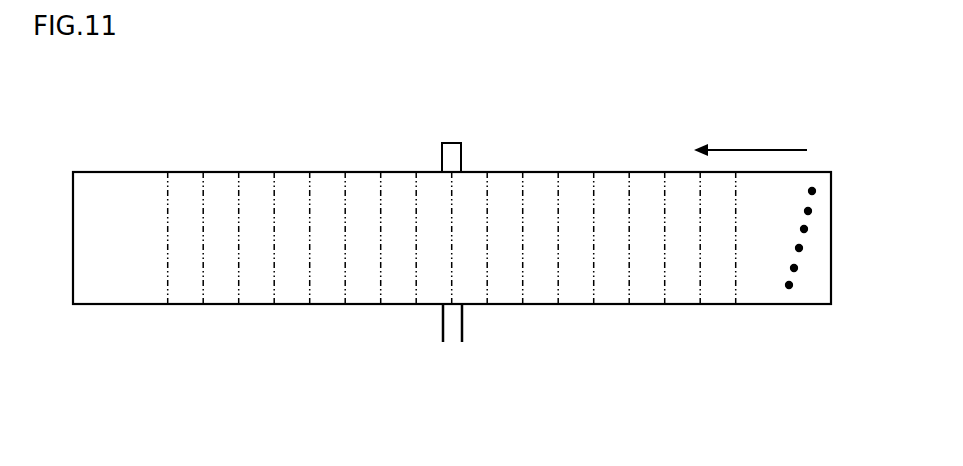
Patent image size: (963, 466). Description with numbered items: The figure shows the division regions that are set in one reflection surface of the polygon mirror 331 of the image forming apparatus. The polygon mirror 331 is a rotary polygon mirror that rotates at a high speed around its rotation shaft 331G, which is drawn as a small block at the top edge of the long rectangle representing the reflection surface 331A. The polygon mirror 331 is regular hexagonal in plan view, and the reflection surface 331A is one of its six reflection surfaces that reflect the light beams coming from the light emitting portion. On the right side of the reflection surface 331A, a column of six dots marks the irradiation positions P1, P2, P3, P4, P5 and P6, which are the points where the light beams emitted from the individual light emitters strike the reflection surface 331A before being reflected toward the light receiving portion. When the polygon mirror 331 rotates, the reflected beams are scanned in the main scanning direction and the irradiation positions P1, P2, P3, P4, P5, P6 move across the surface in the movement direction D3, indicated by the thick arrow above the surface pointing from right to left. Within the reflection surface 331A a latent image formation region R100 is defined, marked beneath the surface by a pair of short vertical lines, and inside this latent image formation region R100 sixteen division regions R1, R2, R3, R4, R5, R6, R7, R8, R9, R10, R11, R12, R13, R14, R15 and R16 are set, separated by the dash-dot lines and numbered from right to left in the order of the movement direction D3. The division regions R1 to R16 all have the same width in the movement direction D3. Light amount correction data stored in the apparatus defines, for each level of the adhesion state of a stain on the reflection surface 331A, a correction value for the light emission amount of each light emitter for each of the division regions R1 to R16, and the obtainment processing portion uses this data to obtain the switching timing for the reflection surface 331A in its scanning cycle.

The polygon mirror 331 is at (127, 120).
The reflection surface 331A is at (117, 267).
The rotation shaft 331G is at (450, 143).
The movement direction D3 is at (749, 149).
The irradiation position P1 is at (812, 191).
The irradiation position P2 is at (808, 211).
The irradiation position P3 is at (804, 229).
The irradiation position P4 is at (799, 248).
The irradiation position P5 is at (794, 268).
The irradiation position P6 is at (789, 285).
The division region R1 is at (720, 285).
The division region R2 is at (684, 285).
The division region R3 is at (648, 285).
The division region R4 is at (613, 285).
The division region R5 is at (578, 285).
The division region R6 is at (542, 285).
The division region R7 is at (506, 285).
The division region R8 is at (471, 285).
The division region R9 is at (436, 285).
The division region R10 is at (400, 285).
The division region R11 is at (364, 285).
The division region R12 is at (329, 285).
The division region R13 is at (294, 285).
The division region R14 is at (258, 285).
The division region R15 is at (222, 285).
The division region R16 is at (187, 285).
The latent image formation region R100 is at (453, 360).